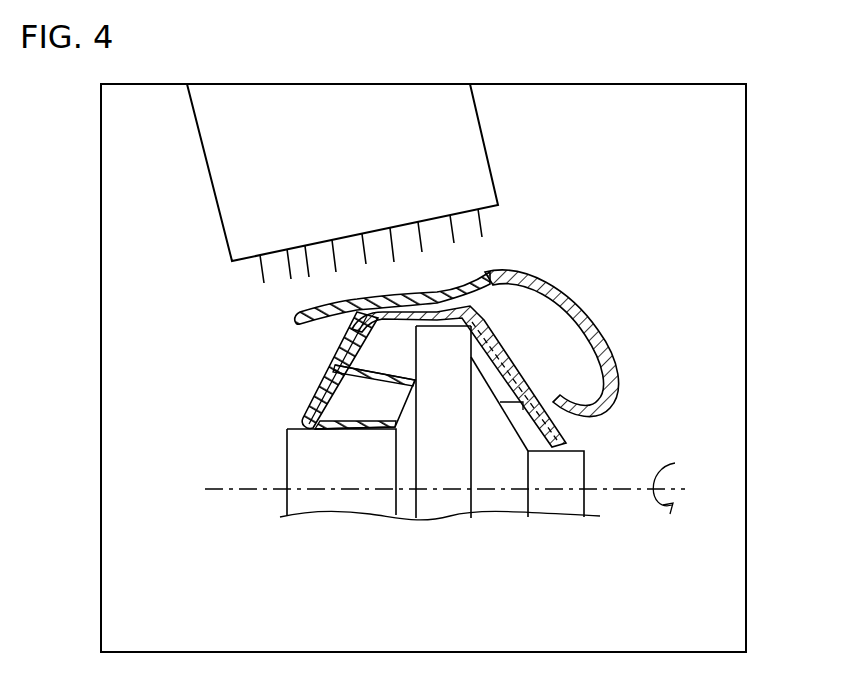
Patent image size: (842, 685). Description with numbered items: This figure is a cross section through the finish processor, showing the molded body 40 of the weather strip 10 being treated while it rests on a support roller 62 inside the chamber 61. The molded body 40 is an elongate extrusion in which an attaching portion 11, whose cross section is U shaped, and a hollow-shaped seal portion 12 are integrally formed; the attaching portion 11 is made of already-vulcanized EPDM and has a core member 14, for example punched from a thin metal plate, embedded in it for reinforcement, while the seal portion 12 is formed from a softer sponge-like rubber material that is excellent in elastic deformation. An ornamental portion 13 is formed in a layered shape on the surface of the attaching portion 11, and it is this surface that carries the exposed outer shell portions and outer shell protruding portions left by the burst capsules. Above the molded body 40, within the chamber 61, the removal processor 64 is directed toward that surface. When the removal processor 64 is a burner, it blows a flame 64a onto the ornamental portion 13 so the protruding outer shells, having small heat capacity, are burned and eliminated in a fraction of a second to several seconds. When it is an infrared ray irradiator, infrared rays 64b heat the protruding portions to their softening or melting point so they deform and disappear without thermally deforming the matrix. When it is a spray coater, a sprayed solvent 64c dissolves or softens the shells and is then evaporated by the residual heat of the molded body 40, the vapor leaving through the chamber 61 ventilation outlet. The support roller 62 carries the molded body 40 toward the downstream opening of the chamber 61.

The removal processor 64 is at (454, 183).
The flame 64a is at (491, 246).
The infrared rays 64b is at (491, 246).
The solvent 64c is at (480, 226).
The chamber 61 is at (746, 292).
The support roller 62 is at (448, 513).
The molded body 40 is at (422, 358).
The weather strip 10 is at (422, 358).
The ornamental portion 13 is at (303, 308).
The attaching portion 11 is at (337, 358).
The core member 14 is at (497, 324).
The seal portion 12 is at (605, 327).